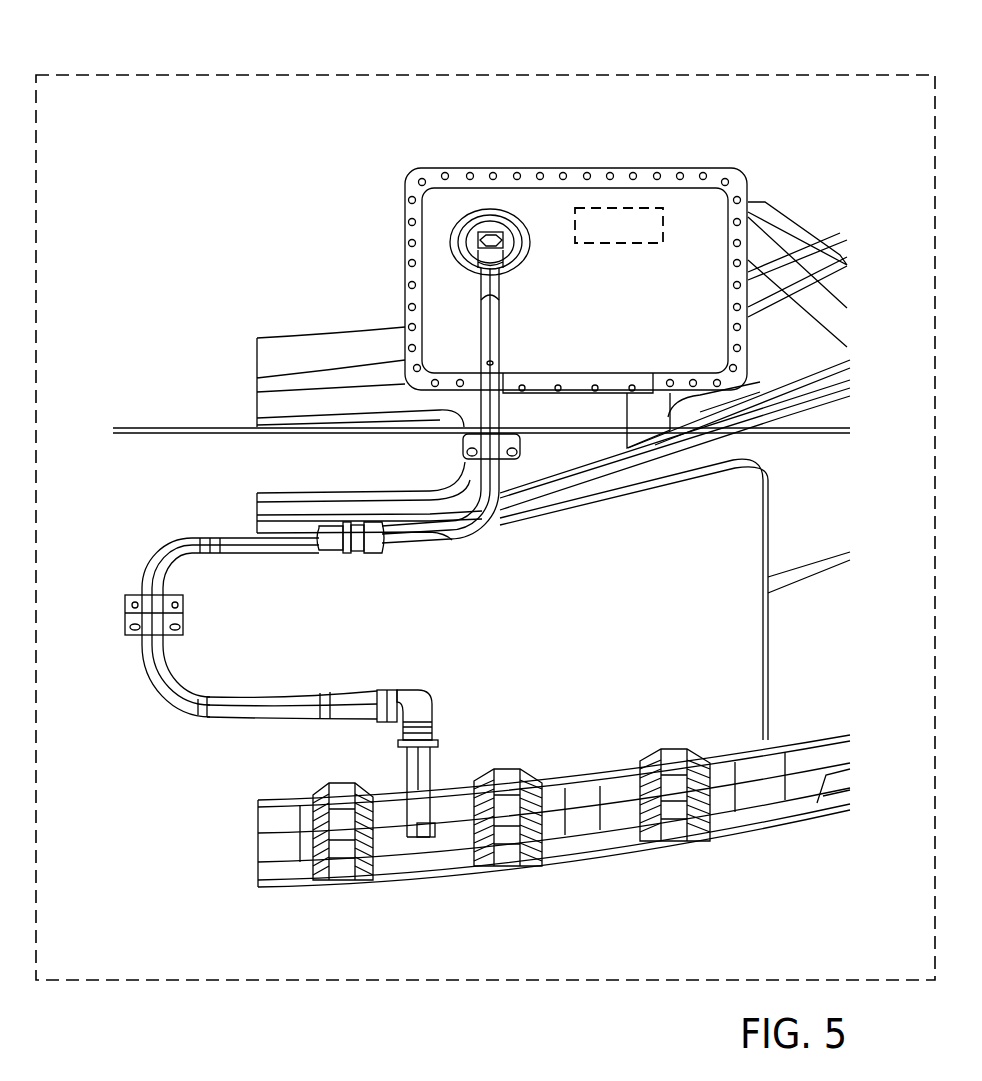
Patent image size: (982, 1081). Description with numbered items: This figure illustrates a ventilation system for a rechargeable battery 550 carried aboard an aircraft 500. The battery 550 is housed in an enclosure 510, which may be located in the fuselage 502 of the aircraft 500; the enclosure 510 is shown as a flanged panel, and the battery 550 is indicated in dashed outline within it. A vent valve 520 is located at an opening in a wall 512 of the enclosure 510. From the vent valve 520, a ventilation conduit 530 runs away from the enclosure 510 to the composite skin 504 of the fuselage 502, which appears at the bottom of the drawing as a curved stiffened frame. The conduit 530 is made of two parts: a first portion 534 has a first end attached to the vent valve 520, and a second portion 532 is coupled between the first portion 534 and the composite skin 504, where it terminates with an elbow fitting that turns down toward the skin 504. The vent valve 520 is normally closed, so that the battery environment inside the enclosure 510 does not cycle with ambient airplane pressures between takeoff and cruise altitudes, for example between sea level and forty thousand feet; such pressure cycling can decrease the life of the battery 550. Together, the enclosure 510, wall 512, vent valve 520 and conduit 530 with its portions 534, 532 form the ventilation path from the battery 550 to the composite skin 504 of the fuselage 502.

The aircraft 500 is at (720, 71).
The enclosure 510 is at (722, 190).
The wall 512 is at (575, 280).
The vent valve 520 is at (481, 217).
The ventilation conduit 530 is at (185, 716).
The second portion 532 is at (432, 777).
The first portion 534 is at (183, 537).
The rechargeable battery 550 is at (617, 205).
The fuselage 502 is at (634, 599).
The composite skin 504 is at (720, 840).